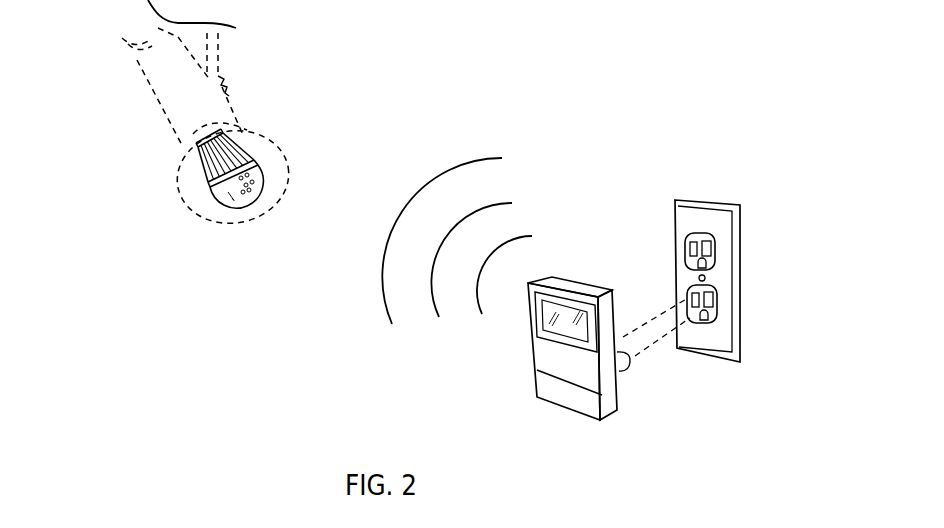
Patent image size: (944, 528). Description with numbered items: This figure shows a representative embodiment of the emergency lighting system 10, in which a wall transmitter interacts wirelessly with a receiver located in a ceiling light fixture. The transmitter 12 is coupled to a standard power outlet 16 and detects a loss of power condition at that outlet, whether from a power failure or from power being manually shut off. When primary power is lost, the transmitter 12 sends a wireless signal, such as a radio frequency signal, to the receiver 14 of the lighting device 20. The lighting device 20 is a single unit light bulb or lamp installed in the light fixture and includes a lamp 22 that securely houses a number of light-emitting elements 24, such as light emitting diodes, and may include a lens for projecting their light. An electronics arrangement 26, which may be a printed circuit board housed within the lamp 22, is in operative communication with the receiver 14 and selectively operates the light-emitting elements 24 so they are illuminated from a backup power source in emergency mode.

The emergency lighting system 10 is at (640, 88).
The transmitter 12 is at (585, 373).
The receiver 14 is at (197, 143).
The power outlet 16 is at (712, 315).
The lighting device 20 is at (290, 68).
The lamp 22 is at (258, 160).
The light-emitting elements 24 is at (221, 260).
The electronics arrangement 26 is at (153, 167).